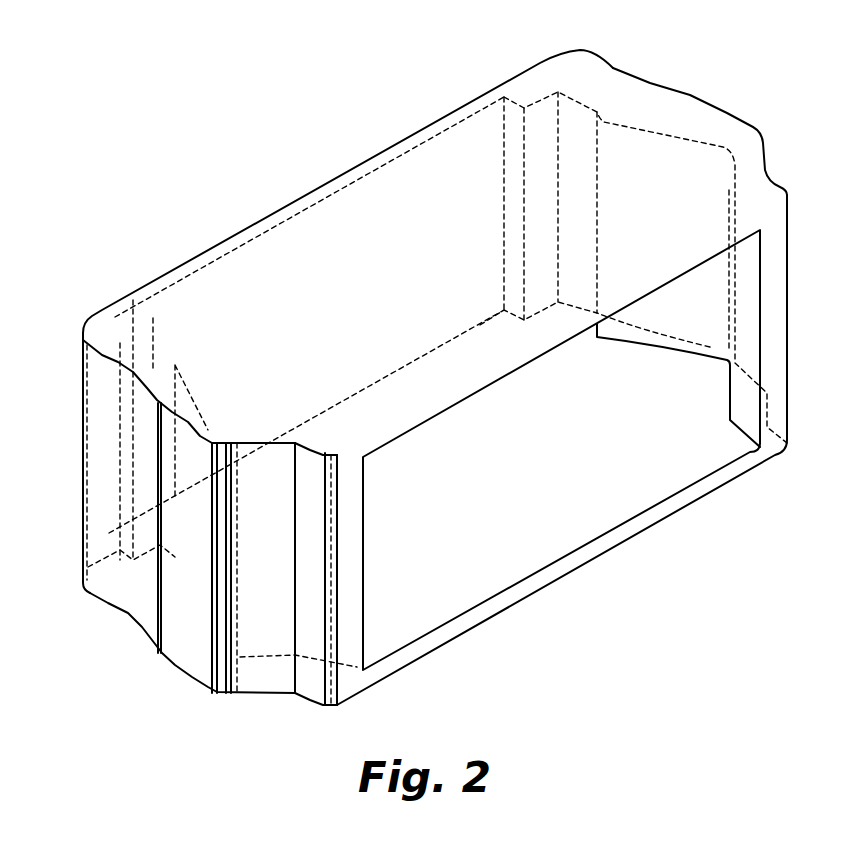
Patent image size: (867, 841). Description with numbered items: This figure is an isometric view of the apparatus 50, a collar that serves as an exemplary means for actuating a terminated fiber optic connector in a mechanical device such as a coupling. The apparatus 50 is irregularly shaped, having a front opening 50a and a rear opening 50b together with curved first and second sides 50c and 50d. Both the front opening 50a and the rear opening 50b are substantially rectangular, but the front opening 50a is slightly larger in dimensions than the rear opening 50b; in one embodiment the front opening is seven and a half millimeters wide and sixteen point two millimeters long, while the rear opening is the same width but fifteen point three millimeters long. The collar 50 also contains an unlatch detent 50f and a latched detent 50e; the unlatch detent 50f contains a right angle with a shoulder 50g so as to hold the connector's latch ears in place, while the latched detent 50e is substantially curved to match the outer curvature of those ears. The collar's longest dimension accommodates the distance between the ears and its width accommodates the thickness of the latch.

The apparatus 50 is at (290, 130).
The front opening 50a is at (455, 603).
The rear opening 50b is at (180, 297).
The first side 50c is at (755, 127).
The second side 50d is at (193, 662).
The latched detent 50e is at (725, 148).
The unlatch detent 50f is at (133, 352).
The shoulder 50g is at (167, 365).